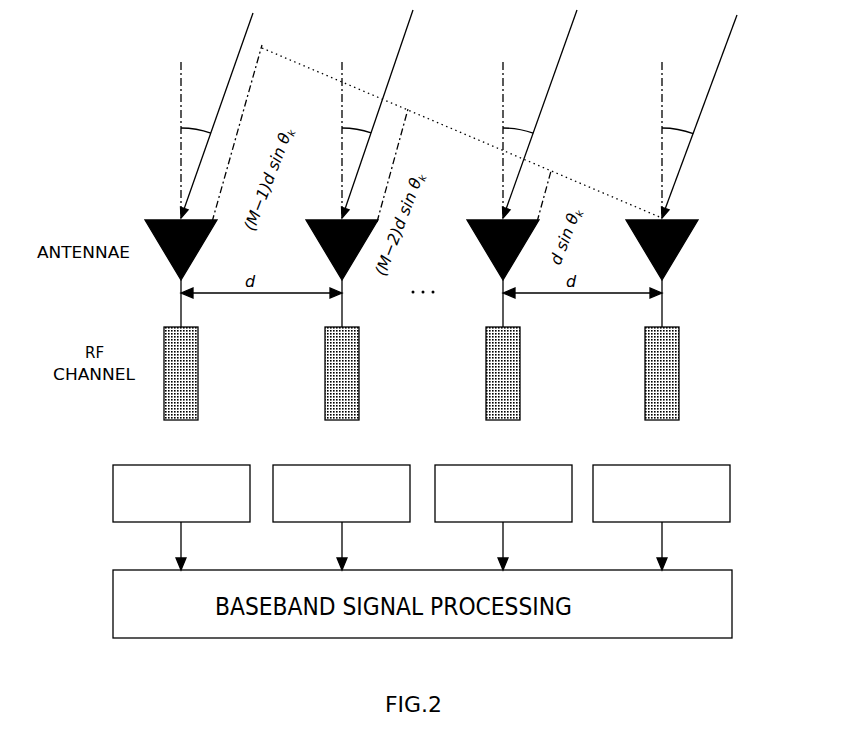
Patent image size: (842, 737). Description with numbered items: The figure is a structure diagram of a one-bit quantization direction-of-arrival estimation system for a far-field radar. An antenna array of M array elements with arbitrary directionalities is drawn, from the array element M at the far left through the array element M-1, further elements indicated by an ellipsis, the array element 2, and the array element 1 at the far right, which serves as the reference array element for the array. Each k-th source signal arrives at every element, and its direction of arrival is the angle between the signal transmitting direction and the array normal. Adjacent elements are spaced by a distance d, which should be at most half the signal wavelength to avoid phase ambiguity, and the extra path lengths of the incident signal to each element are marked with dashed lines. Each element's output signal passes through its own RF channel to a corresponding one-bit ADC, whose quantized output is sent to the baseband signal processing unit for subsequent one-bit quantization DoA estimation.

The array element M is at (181, 420).
The array element M-1 is at (342, 420).
The array element 2 is at (503, 420).
The array element 1 is at (662, 420).